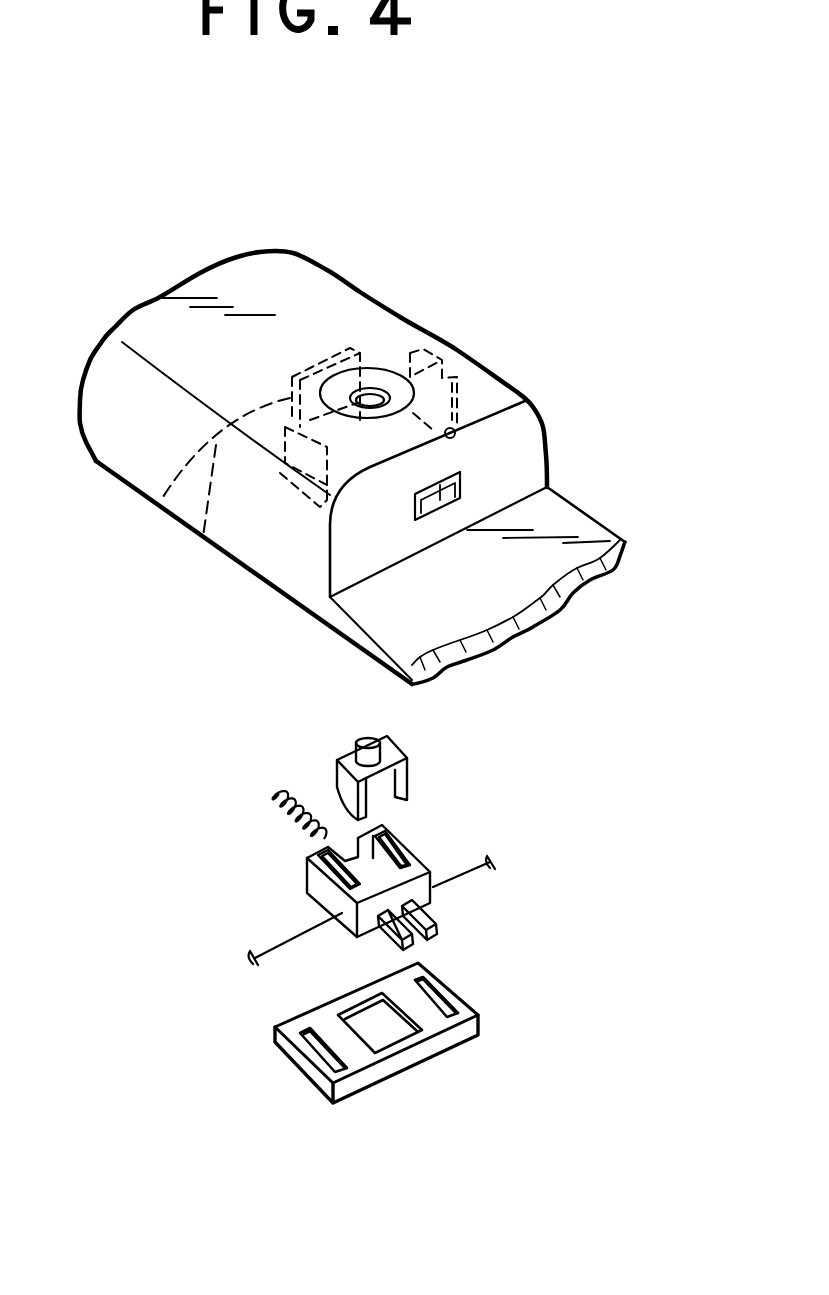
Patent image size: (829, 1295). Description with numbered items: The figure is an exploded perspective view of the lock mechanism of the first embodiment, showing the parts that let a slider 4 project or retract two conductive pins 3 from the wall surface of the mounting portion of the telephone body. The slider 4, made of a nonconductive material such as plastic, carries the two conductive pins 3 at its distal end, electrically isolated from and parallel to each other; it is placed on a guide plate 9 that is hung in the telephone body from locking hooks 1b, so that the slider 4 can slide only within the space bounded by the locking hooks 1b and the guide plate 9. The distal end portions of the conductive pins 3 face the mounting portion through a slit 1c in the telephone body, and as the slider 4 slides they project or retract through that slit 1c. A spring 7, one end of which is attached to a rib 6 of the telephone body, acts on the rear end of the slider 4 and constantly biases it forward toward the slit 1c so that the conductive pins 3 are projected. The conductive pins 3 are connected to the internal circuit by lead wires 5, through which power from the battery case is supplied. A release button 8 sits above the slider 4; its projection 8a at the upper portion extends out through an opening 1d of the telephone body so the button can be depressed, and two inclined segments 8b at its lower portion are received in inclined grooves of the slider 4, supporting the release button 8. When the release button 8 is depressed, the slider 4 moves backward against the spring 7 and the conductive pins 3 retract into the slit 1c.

The locking hooks 1b is at (457, 353).
The slit 1c is at (462, 495).
The opening 1d is at (372, 388).
The conductive pins 3 is at (415, 952).
The slider 4 is at (428, 852).
The lead wires 5 is at (275, 950).
The rib 6 is at (165, 500).
The spring 7 is at (283, 807).
The release button 8 is at (424, 742).
The projection 8a is at (370, 743).
The inclined segments 8b is at (409, 796).
The guide plate 9 is at (435, 1058).